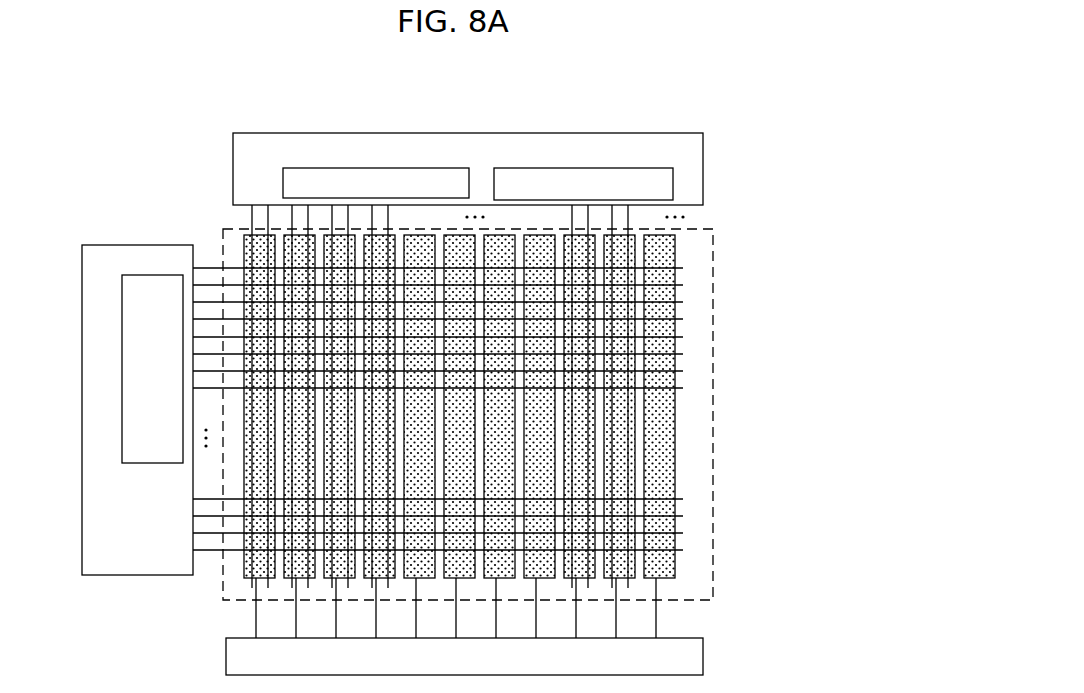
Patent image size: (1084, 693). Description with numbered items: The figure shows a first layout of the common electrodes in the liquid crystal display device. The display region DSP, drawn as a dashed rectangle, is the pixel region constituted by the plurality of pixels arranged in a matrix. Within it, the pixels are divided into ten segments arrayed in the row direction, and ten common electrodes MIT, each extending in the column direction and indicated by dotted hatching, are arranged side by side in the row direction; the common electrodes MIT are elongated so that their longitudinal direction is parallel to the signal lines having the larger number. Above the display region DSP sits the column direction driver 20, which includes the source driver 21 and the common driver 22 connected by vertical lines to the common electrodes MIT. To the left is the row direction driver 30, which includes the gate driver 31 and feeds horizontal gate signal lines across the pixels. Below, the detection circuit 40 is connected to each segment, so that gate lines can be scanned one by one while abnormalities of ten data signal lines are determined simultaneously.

The column direction driver 20 is at (275, 133).
The source driver 21 is at (430, 168).
The common driver 22 is at (590, 168).
The row direction driver 30 is at (82, 505).
The gate driver 31 is at (122, 385).
The detection circuit 40 is at (680, 638).
The display region DSP is at (713, 262).
The common electrode MIT is at (633, 431).